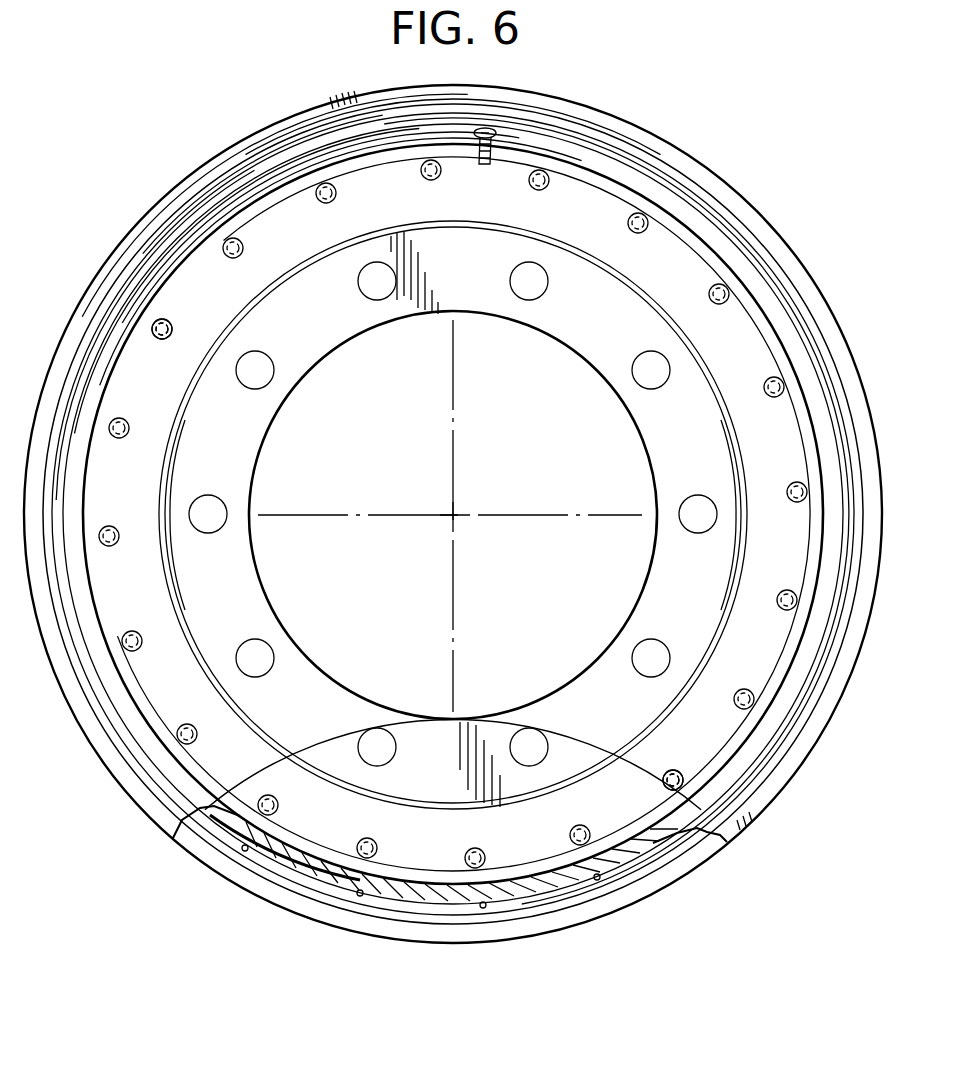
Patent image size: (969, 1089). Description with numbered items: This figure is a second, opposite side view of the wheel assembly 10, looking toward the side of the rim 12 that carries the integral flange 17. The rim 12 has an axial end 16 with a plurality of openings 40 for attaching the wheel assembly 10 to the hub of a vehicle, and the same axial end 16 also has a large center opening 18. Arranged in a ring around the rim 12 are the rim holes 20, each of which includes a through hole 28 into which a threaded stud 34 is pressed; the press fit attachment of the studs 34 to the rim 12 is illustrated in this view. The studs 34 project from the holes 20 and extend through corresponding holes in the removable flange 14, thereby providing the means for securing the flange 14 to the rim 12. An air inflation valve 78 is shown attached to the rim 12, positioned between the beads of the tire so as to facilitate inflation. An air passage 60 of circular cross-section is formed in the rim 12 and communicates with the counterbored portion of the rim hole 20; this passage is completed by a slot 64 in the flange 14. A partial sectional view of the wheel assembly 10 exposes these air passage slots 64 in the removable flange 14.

The wheel assembly 10 is at (168, 136).
The rim 12 is at (783, 794).
The flange 14 is at (531, 946).
The axial end 16 is at (663, 438).
The integral flange 17 is at (824, 307).
The center opening 18 is at (365, 699).
The holes 20 is at (676, 768).
The through hole 28 is at (161, 342).
The threaded studs 34 is at (721, 305).
The openings 40 is at (528, 300).
The air passage 60 is at (268, 852).
The slot 64 is at (243, 851).
The air inflation valve 78 is at (490, 162).